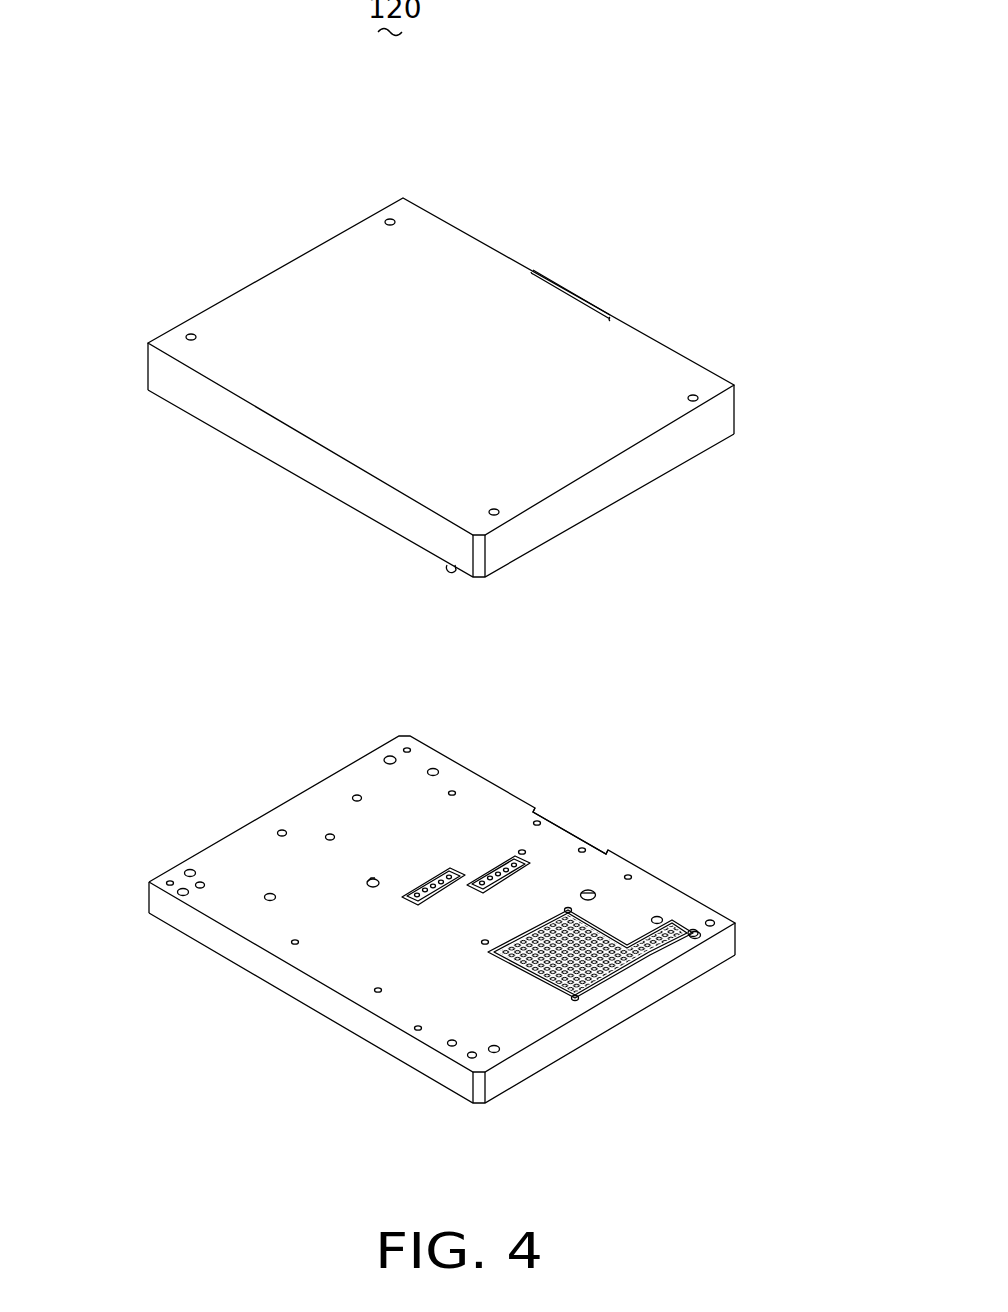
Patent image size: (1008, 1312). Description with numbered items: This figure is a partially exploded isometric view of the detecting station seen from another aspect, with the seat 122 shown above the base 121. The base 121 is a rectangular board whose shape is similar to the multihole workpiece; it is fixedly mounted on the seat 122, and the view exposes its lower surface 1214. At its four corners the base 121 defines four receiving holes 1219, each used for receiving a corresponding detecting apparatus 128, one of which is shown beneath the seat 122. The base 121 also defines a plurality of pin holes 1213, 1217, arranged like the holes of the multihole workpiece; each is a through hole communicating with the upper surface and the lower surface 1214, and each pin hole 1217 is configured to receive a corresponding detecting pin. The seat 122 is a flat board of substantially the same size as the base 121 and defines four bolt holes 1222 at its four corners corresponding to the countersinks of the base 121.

The base 121 is at (290, 780).
The seat 122 is at (632, 362).
The detecting apparatus 128 is at (452, 577).
The pin hole 1213 is at (522, 855).
The lower surface 1214 is at (477, 825).
The pin hole 1217 is at (617, 960).
The receiving hole 1219 is at (180, 893).
The bolt hole 1222 is at (389, 218).